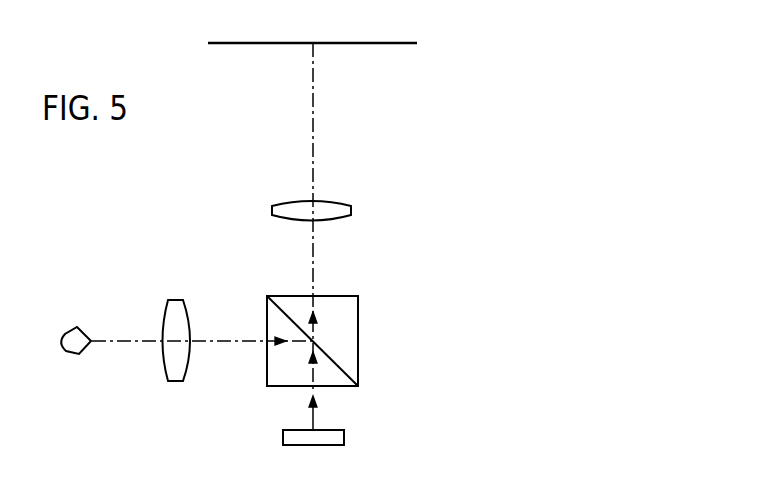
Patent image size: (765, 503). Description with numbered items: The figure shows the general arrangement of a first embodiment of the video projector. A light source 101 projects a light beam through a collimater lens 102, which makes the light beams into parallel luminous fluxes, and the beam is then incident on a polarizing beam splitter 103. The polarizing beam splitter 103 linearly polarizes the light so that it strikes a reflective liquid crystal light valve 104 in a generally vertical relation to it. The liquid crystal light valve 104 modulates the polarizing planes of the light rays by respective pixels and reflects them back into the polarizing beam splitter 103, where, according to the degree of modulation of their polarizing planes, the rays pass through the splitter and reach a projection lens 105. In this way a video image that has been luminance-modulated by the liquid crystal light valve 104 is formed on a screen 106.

The light source 101 is at (75, 328).
The collimater lens 102 is at (168, 382).
The polarizing beam splitter 103 is at (350, 296).
The reflective liquid crystal light valve 104 is at (345, 438).
The projection lens 105 is at (342, 203).
The screen 106 is at (366, 43).